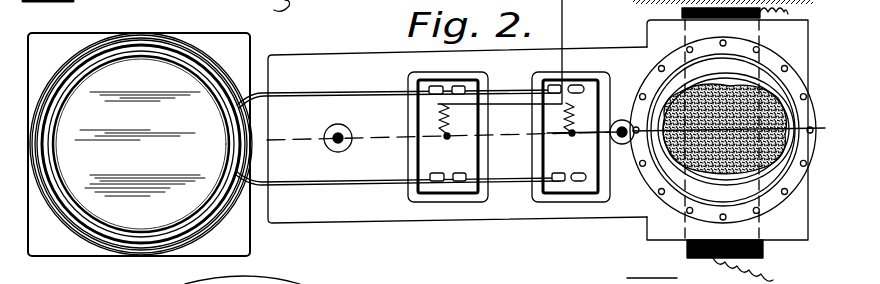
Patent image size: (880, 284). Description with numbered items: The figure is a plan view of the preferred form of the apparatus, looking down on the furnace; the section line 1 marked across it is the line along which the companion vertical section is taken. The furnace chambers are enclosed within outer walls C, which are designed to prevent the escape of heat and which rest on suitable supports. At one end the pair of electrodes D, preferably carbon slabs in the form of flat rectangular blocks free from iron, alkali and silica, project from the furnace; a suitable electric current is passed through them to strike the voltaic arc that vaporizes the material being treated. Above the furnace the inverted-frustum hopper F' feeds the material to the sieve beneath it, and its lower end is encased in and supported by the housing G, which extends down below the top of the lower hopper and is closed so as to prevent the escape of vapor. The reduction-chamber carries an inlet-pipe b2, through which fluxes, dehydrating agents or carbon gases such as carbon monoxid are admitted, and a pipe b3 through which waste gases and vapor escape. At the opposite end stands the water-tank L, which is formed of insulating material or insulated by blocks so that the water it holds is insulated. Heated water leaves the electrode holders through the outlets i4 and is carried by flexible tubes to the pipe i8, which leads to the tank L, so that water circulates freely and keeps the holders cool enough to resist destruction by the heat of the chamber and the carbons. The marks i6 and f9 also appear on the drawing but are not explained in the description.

The water-tank L is at (140, 144).
The section line 1 1 is at (540, 160).
The upper conductor wire i6 is at (284, 121).
The pipe i8 is at (298, 200).
The pipe b3 is at (343, 128).
The outer walls C is at (512, 202).
The outlets i4 is at (440, 131).
The inlet-pipe b2 is at (621, 144).
The housing G is at (655, 82).
The hopper F' is at (726, 106).
The electrodes D is at (682, 15).
The conductor f9 is at (627, 283).